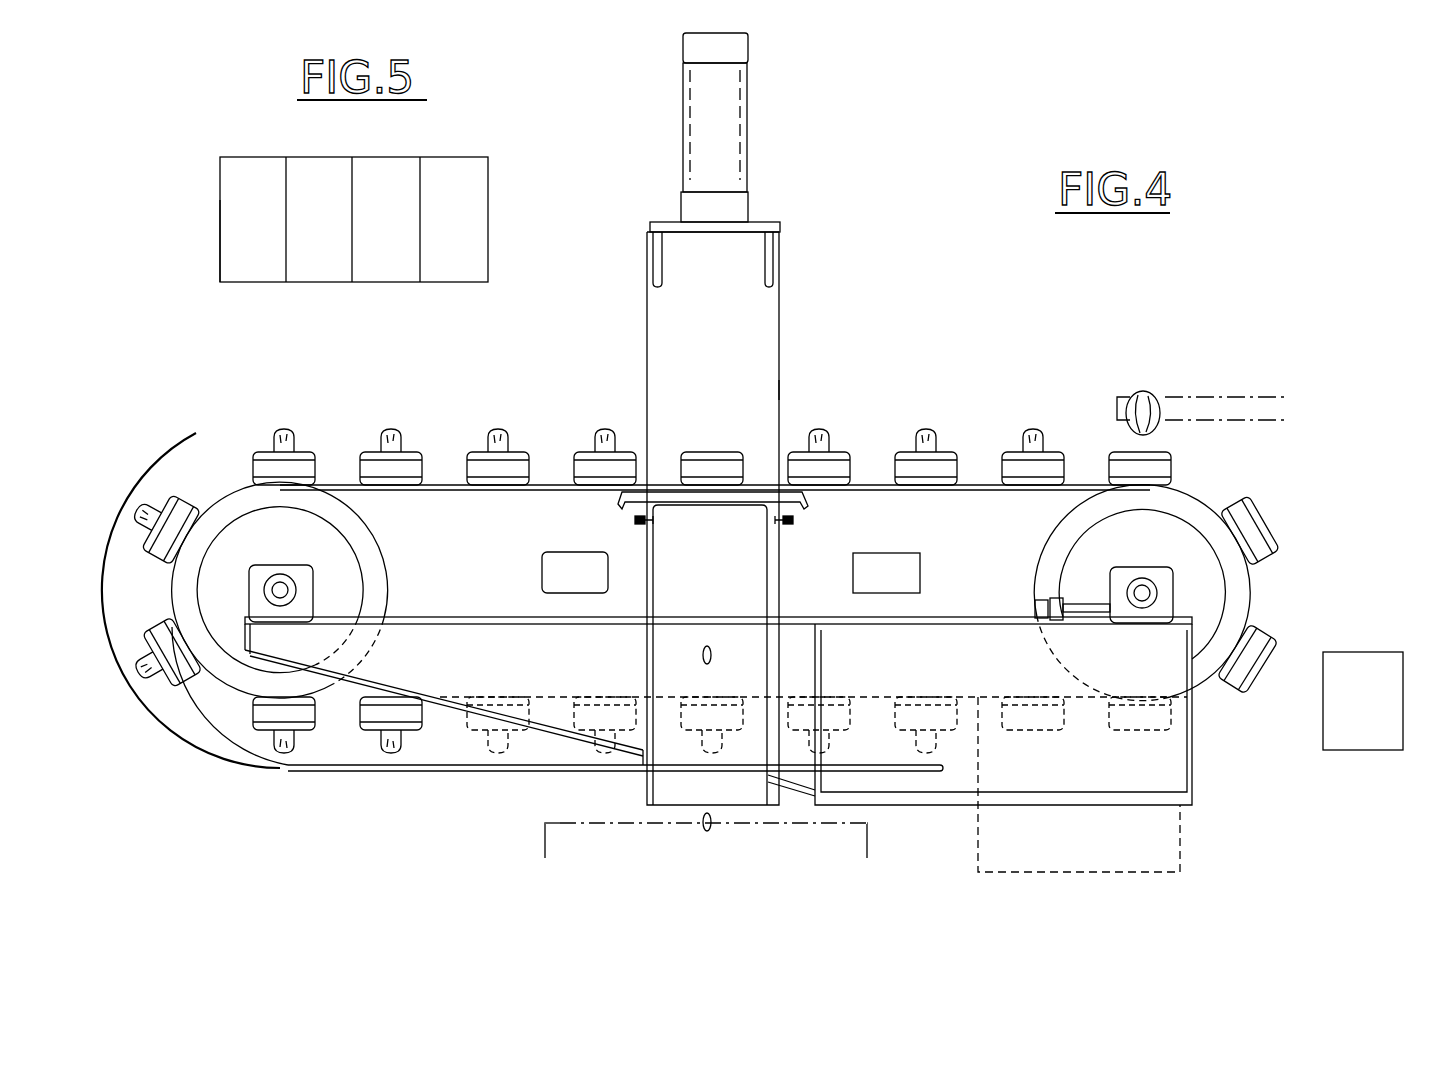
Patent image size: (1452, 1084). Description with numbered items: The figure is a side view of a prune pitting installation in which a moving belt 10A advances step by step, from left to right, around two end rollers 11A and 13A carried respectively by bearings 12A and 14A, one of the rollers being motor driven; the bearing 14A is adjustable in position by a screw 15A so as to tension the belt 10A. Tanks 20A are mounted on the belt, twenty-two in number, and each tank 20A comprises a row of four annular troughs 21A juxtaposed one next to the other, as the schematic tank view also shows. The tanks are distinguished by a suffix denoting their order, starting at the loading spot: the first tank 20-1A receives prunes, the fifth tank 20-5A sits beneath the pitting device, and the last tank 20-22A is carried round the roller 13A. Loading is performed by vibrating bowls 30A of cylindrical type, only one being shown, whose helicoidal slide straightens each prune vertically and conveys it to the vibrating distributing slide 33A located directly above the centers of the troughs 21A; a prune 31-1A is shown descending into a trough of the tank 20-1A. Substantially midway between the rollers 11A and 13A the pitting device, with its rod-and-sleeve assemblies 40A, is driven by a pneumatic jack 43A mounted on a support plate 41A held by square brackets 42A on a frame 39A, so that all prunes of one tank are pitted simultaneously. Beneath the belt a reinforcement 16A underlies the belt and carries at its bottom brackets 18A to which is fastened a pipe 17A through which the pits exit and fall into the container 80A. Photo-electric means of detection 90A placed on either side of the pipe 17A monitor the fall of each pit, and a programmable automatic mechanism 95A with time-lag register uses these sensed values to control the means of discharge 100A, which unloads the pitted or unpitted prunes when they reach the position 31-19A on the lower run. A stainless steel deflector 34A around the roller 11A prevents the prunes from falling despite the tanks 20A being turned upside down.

In FIG. 4, the moving belt 10A is at (440, 481).
In FIG. 4, the end roller 11A is at (247, 534).
In FIG. 4, the bearing 12A is at (295, 578).
In FIG. 4, the end roller 13A is at (1203, 672).
In FIG. 4, the bearing 14A is at (1145, 580).
In FIG. 4, the screw 15A is at (1032, 607).
In FIG. 4, the reinforcement 16A is at (630, 506).
In FIG. 4, the pipe 17A is at (730, 610).
In FIG. 4, the bracket 18A is at (787, 506).
In FIG. 4, the tank 20-1A is at (1172, 472).
In FIG. 4, the tank 20-5A is at (717, 458).
In FIG. 4, the tank 20-22A is at (1258, 564).
In FIG. 4, the vibrating bowl 30A is at (1232, 398).
In FIG. 4, the prune 31-1A is at (1135, 395).
In FIG. 4, the vibrating distributing slide 33A is at (1115, 416).
In FIG. 4, the discharge position 31-19A is at (1040, 678).
In FIG. 4, the deflector 34A is at (162, 742).
In FIG. 4, the frame 39A is at (780, 392).
In FIG. 4, the rod-and-sleeve assemblies 40A is at (782, 320).
In FIG. 4, the support plate 41A is at (782, 228).
In FIG. 4, the square brackets 42A is at (770, 262).
In FIG. 4, the jack 43A is at (748, 114).
In FIG. 4, the container 80A is at (582, 821).
In FIG. 4, the means of detection 90A is at (545, 570).
In FIG. 4, the programmable automatic mechanism 95A is at (1358, 745).
In FIG. 4, the means of discharge 100A is at (1180, 838).
In FIG. 5, the tank 20A is at (490, 213).
In FIG. 5, the annular trough 21A is at (247, 257).